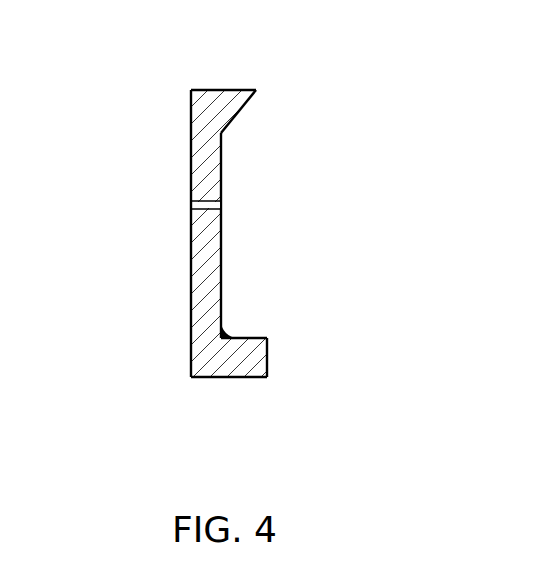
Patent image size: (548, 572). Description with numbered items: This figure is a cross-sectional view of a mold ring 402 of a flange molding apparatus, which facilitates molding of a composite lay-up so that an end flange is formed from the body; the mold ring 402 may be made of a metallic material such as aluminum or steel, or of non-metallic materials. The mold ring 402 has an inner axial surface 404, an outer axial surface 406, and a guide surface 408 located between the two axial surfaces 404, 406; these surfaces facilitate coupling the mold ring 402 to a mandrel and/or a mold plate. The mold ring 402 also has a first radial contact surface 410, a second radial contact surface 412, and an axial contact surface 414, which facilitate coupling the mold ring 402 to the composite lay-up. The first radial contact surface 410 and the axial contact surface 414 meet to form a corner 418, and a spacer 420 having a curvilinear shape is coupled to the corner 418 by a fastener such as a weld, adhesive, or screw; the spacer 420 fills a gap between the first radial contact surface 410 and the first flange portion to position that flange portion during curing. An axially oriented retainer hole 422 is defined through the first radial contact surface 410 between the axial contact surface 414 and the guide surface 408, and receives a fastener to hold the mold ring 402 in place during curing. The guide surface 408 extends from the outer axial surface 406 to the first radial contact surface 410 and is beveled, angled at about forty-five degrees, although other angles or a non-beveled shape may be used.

The mold ring 402 is at (274, 236).
The inner axial surface 404 is at (212, 378).
The outer axial surface 406 is at (222, 90).
The guide surface 408 is at (242, 108).
The first radial contact surface 410 is at (221, 160).
The second radial contact surface 412 is at (267, 360).
The axial contact surface 414 is at (268, 336).
The corner 418 is at (243, 330).
The spacer 420 is at (231, 330).
The retainer hole 422 is at (190, 205).